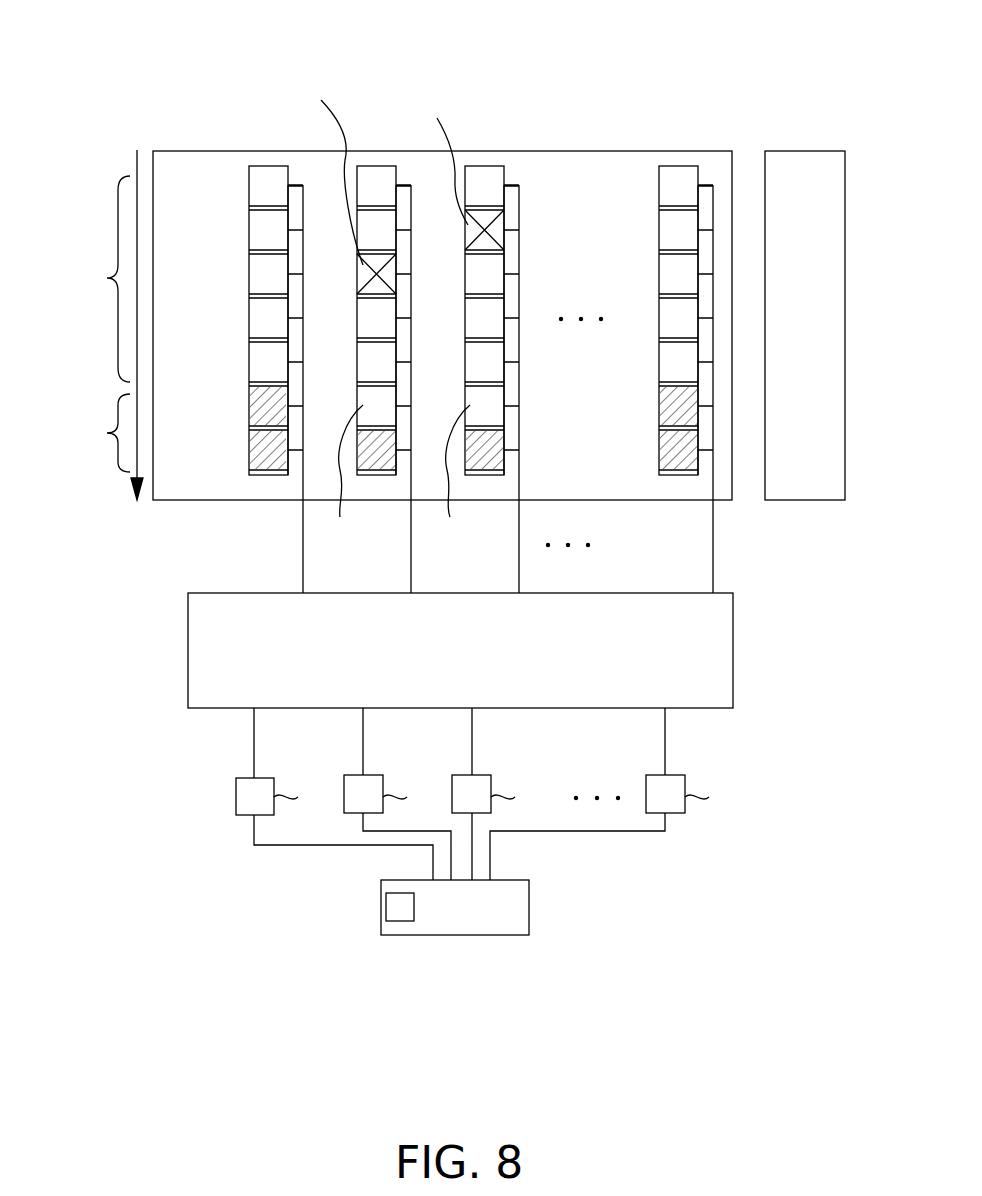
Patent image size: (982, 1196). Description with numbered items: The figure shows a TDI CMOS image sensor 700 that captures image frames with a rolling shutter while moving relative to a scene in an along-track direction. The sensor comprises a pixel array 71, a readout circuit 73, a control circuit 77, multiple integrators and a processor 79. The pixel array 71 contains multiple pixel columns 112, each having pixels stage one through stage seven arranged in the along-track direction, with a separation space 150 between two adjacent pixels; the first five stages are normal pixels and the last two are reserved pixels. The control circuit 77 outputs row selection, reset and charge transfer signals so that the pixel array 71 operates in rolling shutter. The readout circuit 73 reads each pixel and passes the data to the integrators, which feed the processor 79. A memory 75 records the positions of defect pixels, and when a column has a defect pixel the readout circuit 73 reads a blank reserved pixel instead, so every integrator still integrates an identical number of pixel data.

The TDI CMOS image sensor 700 is at (174, 38).
The pixel array 71 is at (190, 151).
The pixel column 112 is at (678, 166).
The separation space 150 is at (659, 294).
The control circuit 77 is at (805, 500).
The readout circuit 73 is at (733, 655).
The processor 79 is at (529, 910).
The memory 75 is at (386, 912).